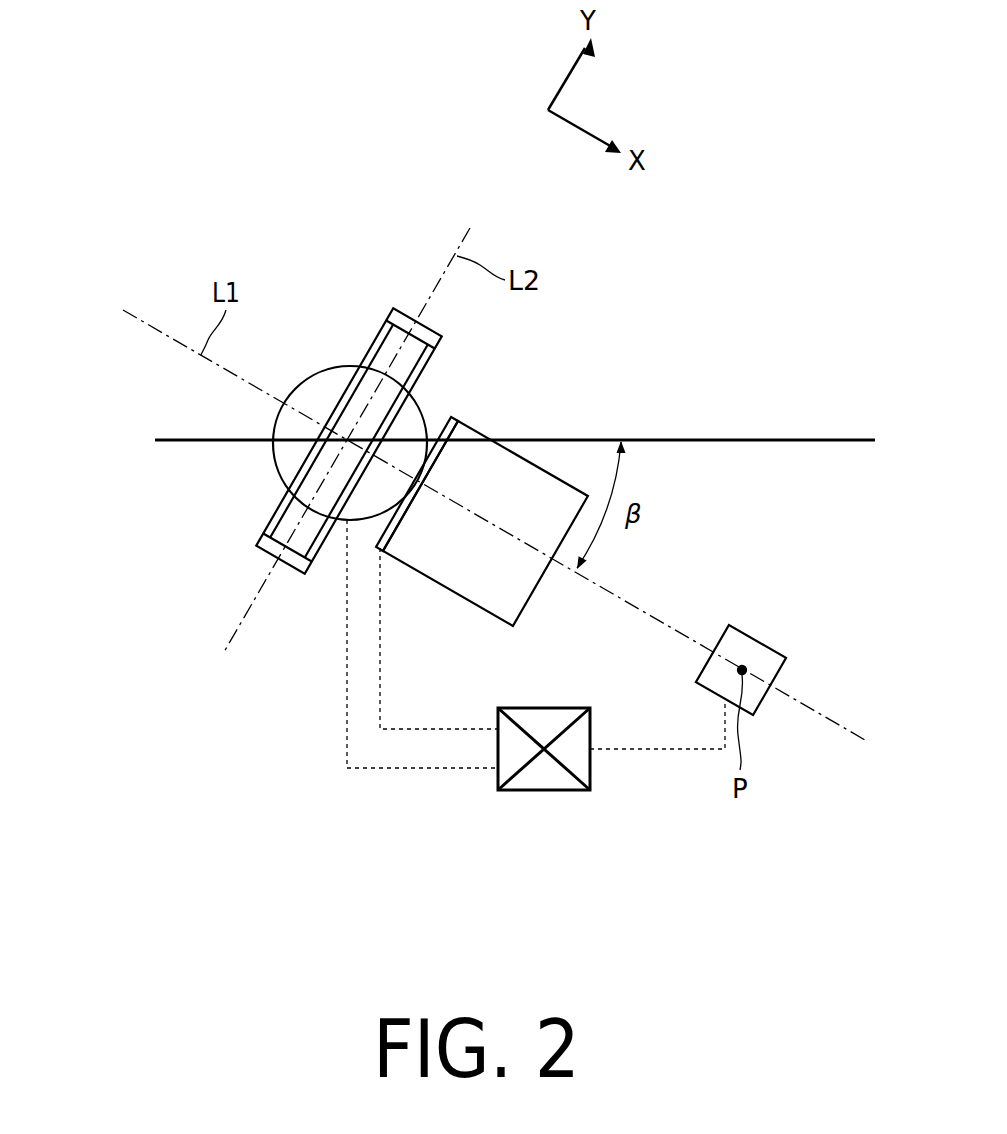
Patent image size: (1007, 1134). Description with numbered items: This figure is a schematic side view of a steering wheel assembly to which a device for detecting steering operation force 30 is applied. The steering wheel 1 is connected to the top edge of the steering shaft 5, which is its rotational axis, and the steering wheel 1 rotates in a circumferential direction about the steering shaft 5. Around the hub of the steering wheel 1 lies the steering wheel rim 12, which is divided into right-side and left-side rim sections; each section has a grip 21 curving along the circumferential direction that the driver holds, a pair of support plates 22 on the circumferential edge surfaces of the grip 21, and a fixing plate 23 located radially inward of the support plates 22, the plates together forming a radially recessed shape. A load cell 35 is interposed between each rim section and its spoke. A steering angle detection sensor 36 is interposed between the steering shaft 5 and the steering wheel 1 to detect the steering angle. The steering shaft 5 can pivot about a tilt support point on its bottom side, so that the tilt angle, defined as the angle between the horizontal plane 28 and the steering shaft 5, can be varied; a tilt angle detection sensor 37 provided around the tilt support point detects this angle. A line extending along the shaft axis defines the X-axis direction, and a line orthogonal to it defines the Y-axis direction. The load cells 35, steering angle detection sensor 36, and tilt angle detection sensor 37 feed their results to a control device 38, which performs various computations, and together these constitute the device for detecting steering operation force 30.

The steering wheel 1 is at (425, 155).
The steering shaft 5 is at (485, 430).
The steering wheel rim 12 is at (289, 459).
The grip 21 is at (278, 508).
The support plates 22 is at (294, 569).
The fixing plate 23 is at (381, 329).
The horizontal plane 28 is at (722, 440).
The device for detecting steering operation force 30 is at (536, 738).
The load cell 35 is at (280, 409).
The steering angle detection sensor 36 is at (455, 418).
The tilt angle detection sensor 37 is at (758, 641).
The control device 38 is at (547, 792).